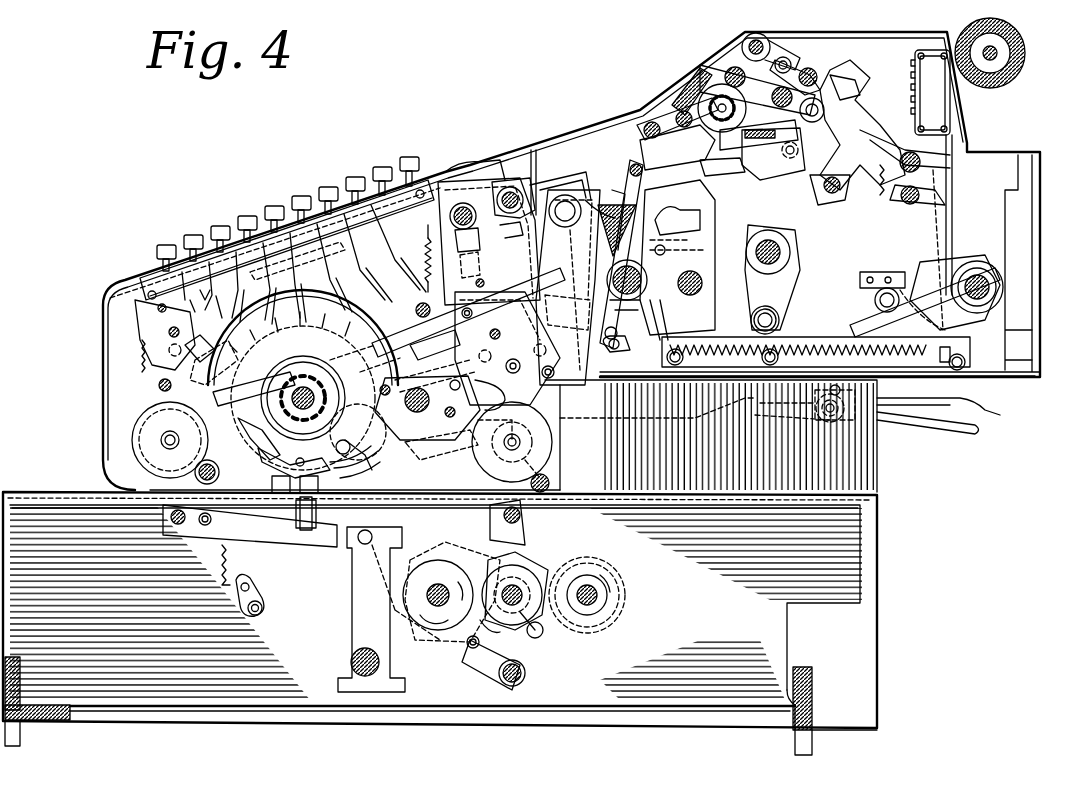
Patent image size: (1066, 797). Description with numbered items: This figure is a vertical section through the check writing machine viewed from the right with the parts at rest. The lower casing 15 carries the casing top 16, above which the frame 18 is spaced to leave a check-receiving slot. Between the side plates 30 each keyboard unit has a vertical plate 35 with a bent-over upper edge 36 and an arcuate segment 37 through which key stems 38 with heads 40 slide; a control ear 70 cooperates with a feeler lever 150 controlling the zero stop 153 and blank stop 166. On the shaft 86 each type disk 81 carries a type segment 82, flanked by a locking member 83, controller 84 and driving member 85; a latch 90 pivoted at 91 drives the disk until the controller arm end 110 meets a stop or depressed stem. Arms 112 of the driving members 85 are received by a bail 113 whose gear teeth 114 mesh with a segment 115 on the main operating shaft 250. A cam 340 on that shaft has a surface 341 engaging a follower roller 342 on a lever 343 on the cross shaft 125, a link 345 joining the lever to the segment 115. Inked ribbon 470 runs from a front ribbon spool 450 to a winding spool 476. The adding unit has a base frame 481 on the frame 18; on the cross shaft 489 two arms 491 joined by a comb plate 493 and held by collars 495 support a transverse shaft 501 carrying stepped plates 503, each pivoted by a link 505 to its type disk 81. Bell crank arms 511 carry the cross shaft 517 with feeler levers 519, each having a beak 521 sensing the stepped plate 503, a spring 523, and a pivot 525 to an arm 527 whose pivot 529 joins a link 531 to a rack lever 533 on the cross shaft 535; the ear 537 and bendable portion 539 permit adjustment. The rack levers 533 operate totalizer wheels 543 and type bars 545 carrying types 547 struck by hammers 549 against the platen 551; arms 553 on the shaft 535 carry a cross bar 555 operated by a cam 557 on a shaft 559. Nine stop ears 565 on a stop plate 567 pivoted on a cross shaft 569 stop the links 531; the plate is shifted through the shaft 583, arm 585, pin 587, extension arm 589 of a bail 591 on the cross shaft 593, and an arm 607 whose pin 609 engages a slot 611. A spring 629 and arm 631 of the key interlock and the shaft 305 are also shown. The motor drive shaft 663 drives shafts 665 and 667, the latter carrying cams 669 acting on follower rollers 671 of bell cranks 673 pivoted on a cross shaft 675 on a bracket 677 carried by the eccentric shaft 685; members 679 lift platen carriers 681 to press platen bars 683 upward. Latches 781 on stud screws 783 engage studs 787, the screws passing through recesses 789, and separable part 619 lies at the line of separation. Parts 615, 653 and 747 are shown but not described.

The lower casing 15 is at (832, 693).
The casing top 16 is at (80, 495).
The frame 18 is at (711, 436).
The side plates 30 is at (110, 298).
The vertical plate 35 is at (455, 170).
The laterally bent upper edge 36 is at (350, 195).
The arcuate segment 37 is at (303, 337).
The key stems 38 is at (165, 270).
The key head 40 is at (300, 210).
The zero stop and blank stop control ear 70 is at (206, 292).
The type disk 81 is at (385, 455).
The type segment 82 is at (382, 476).
The locking member 83 is at (246, 434).
The controller 84 is at (262, 470).
The driving member 85 is at (312, 398).
The shaft 86 is at (303, 398).
The latch 90 is at (373, 458).
The latch pivot 91 is at (358, 462).
The controller arm end 110 is at (254, 389).
The arms 112 is at (262, 360).
The bail 113 is at (272, 342).
The gear teeth 114 is at (303, 395).
The gear segment 115 is at (435, 346).
The cross shaft 125 is at (498, 325).
The feeler lever 150 is at (150, 322).
The zero stop 153 is at (245, 368).
The blank stop 166 is at (191, 345).
The main operating shaft 250 is at (371, 432).
The shaft 305 is at (380, 346).
The cam 340 is at (440, 408).
The cam surface 341 is at (496, 412).
The cam follower roller 342 is at (435, 376).
The lever 343 is at (487, 321).
The link 345 is at (441, 447).
The front ribbon spool 450 is at (170, 440).
The inked ribbon 470 is at (435, 489).
The winding spool 476 is at (560, 440).
The base frame 481 is at (938, 400).
The cross shaft 489 is at (480, 235).
The plate-like arms 491 is at (478, 255).
The comb plate 493 is at (474, 214).
The collars 495 is at (481, 164).
The transverse shaft 501 is at (555, 378).
The stepped plates 503 is at (566, 309).
The link 505 is at (432, 282).
The rearwardly extending arms 511 is at (619, 312).
The cross shaft 517 is at (655, 305).
The feeler levers 519 is at (621, 249).
The beak 521 is at (568, 287).
The spring 523 is at (712, 340).
The pivot 525 is at (677, 233).
The arm 527 is at (665, 198).
The pivot connection 529 is at (677, 147).
The link 531 is at (757, 155).
The rack lever 533 is at (800, 200).
The cross shaft 535 is at (792, 245).
The ear 537 is at (648, 275).
The bendable portion 539 is at (665, 250).
The totalizer wheels 543 is at (700, 105).
The type bars 545 is at (952, 163).
The types 547 is at (952, 118).
The hammers 549 is at (845, 80).
The platen 551 is at (1018, 42).
The arms 553 is at (772, 279).
The cross bar 555 is at (709, 166).
The cam 557 is at (965, 258).
The shaft 559 is at (965, 290).
The nine stop ears 565 is at (586, 190).
The stop plate 567 is at (534, 150).
The cross shaft 569 is at (508, 192).
The shaft 583 is at (758, 33).
The arm 585 is at (785, 52).
The pin 587 is at (790, 58).
The extension arm 589 is at (815, 67).
The bail 591 is at (865, 125).
The cross shaft 593 is at (835, 75).
The arm 607 is at (565, 201).
The pin 609 is at (522, 222).
The slot 611 is at (568, 176).
The wedge 615 is at (617, 230).
The separable part 619 is at (548, 342).
The spring 629 is at (488, 241).
The arm 631 is at (481, 278).
The link 653 is at (618, 210).
The drive shaft 663 is at (600, 600).
The shaft 665 is at (520, 588).
The shaft 667 is at (440, 585).
The cams 669 is at (480, 655).
The follower rollers 671 is at (455, 640).
The bell cranks 673 is at (395, 580).
The cross shaft 675 is at (370, 533).
The bracket 677 is at (371, 609).
The members 679 is at (330, 550).
The platen carriers 681 is at (285, 533).
The platen bars 683 is at (315, 512).
The eccentric shaft 685 is at (350, 660).
The pivot 747 is at (704, 283).
The latches 781 is at (910, 418).
The stud screws 783 is at (825, 415).
The studs 787 is at (840, 390).
The recesses 789 is at (815, 398).